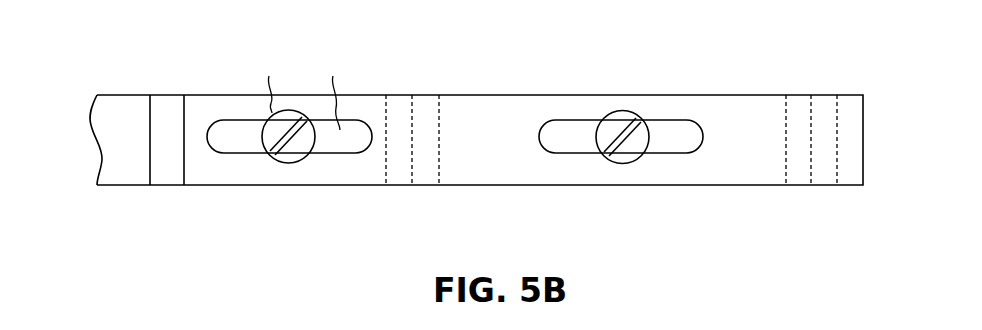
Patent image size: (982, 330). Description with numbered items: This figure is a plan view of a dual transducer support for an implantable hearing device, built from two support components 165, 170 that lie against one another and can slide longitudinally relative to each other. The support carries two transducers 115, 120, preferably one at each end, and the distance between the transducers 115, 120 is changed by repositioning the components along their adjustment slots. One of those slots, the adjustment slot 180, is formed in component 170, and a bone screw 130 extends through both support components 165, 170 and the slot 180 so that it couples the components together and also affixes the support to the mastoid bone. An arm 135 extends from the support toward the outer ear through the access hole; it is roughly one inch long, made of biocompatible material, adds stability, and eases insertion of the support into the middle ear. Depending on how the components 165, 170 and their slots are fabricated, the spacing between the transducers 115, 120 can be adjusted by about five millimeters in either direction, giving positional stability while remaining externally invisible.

The transducer 115 is at (400, 177).
The transducer 120 is at (824, 177).
The bone screw 130 is at (608, 113).
The arm 135 is at (113, 105).
The support component 165 is at (165, 177).
The support component 170 is at (485, 108).
The adjustment slot 180 is at (673, 133).